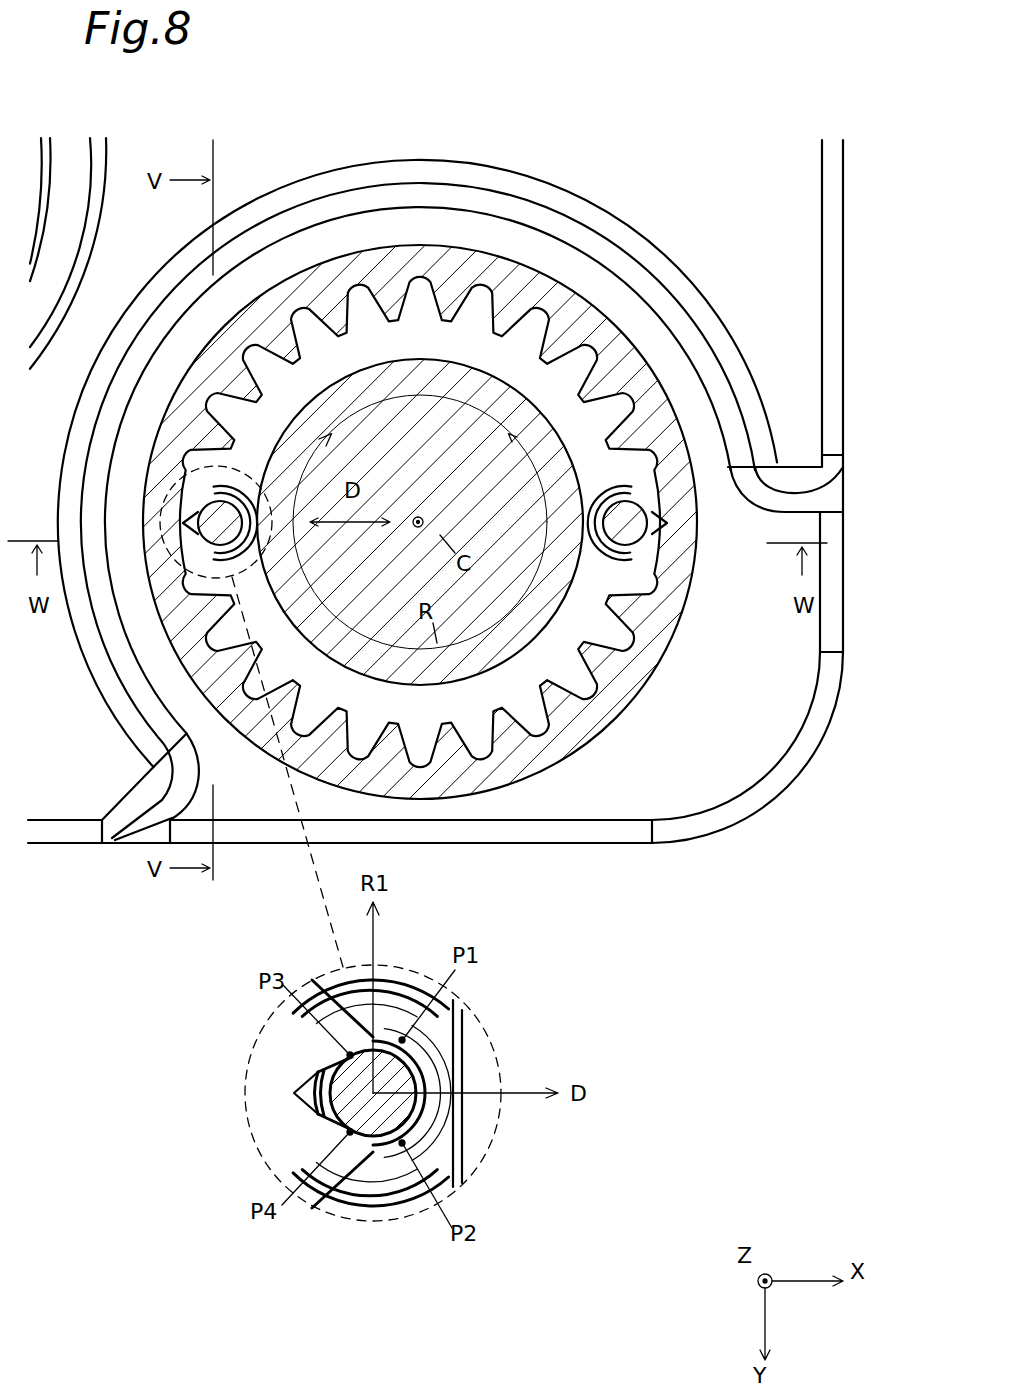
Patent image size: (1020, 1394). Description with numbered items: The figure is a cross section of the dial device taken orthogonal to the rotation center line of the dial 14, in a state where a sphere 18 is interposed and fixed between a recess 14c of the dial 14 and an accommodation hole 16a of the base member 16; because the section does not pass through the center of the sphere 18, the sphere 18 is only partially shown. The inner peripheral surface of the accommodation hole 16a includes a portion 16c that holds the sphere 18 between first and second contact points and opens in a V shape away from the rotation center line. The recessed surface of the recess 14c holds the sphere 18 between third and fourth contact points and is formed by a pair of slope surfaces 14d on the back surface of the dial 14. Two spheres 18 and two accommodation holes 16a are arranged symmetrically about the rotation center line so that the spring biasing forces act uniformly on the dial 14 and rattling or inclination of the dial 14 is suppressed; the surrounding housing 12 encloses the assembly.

The housing 12 is at (670, 690).
The dial 14 is at (700, 607).
The recess 14c is at (186, 533).
The slope surfaces 14d is at (333, 1065).
The base member 16 is at (622, 693).
The accommodation hole 16a is at (249, 463).
The portion 16c is at (463, 1060).
The sphere 18 is at (206, 516).